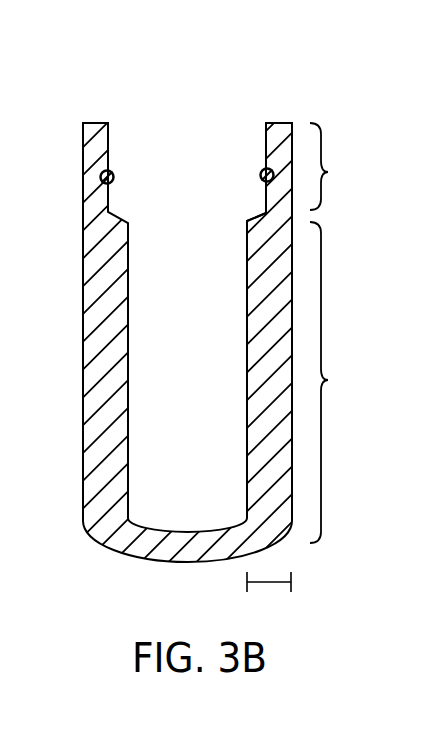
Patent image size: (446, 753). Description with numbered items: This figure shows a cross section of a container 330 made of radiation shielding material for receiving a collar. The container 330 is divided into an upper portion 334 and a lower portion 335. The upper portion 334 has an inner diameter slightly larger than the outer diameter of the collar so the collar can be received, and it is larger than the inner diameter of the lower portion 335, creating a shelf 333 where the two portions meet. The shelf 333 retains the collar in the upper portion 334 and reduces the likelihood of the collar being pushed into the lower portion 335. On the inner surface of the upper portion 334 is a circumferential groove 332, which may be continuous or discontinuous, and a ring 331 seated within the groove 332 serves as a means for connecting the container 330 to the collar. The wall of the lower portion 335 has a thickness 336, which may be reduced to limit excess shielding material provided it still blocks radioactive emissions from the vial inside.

The container 330 is at (198, 92).
The ring 331 is at (112, 175).
The circumferential groove 332 is at (262, 186).
The shelf 333 is at (262, 222).
The upper portion 334 is at (328, 172).
The lower portion 335 is at (328, 380).
The thickness 336 is at (268, 592).